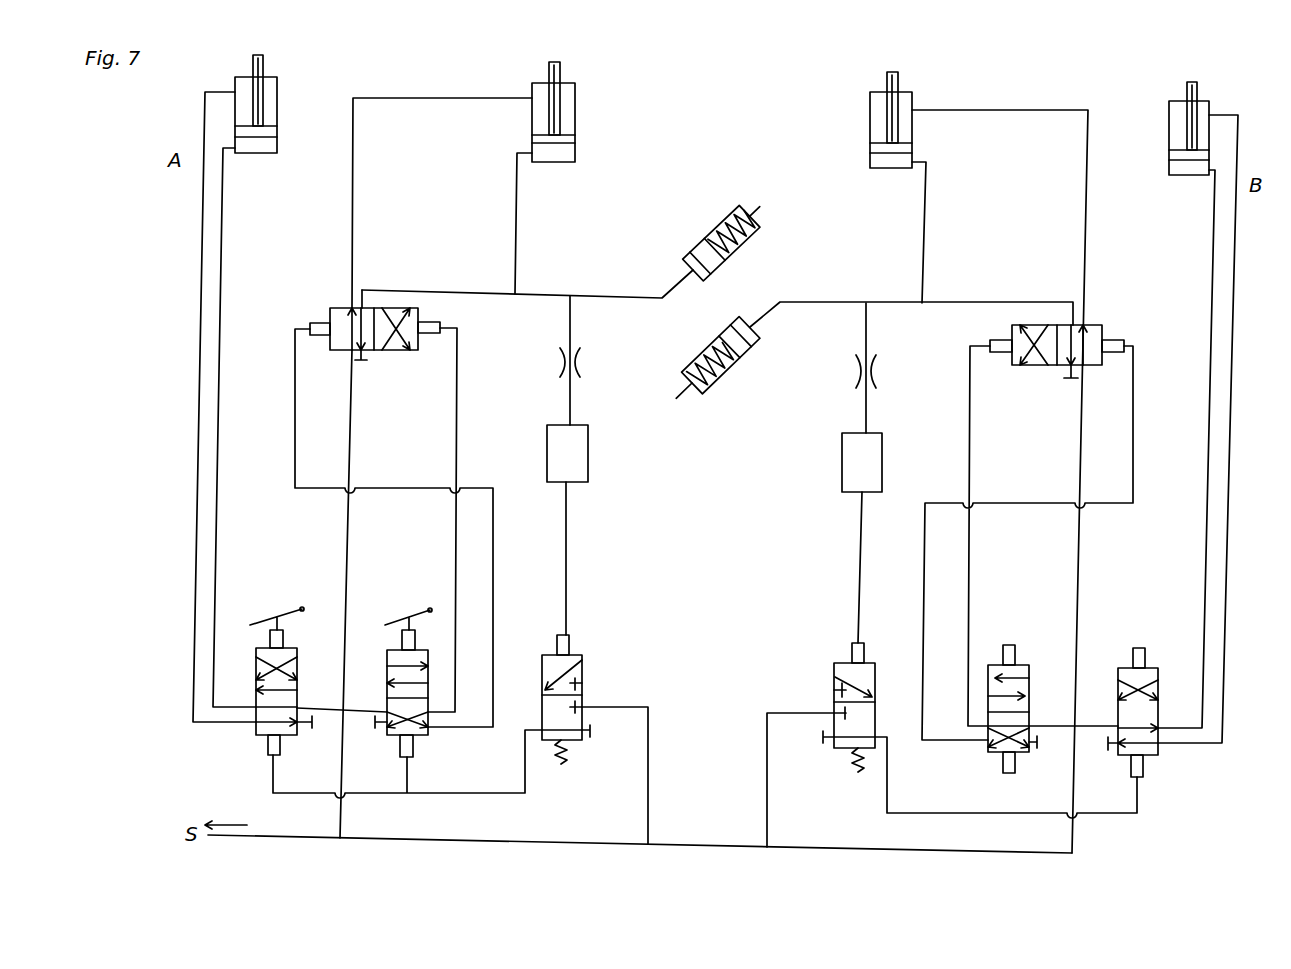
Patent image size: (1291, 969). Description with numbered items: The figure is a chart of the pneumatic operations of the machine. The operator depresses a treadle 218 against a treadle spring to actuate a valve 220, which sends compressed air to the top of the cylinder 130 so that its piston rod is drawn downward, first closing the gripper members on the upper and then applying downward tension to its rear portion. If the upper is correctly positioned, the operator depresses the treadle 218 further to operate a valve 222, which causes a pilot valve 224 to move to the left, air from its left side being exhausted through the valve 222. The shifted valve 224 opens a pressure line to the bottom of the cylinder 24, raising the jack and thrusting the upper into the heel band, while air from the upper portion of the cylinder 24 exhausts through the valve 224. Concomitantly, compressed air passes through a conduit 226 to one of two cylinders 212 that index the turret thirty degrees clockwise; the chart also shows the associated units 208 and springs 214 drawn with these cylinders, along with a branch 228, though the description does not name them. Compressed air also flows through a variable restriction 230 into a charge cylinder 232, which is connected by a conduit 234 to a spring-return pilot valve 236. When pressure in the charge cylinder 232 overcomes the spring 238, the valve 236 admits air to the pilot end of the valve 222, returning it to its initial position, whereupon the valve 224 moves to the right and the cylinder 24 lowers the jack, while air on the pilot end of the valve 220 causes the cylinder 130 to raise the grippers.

The cylinder 130 is at (278, 120).
The cylinder 24 is at (578, 122).
The spring-loaded piston unit 208 is at (752, 217).
The cylinder 212 is at (707, 238).
The spring 214 is at (727, 217).
The treadle 218 is at (288, 612).
The valve 220 is at (297, 665).
The valve 222 is at (430, 672).
The pilot valve 224 is at (337, 307).
The conduit 226 is at (597, 297).
The branch conduit 228 is at (573, 317).
The variable restriction 230 is at (546, 366).
The charge cylinder 232 is at (589, 466).
The conduit 234 is at (567, 560).
The spring-return pilot valve 236 is at (582, 665).
The spring 238 is at (568, 748).